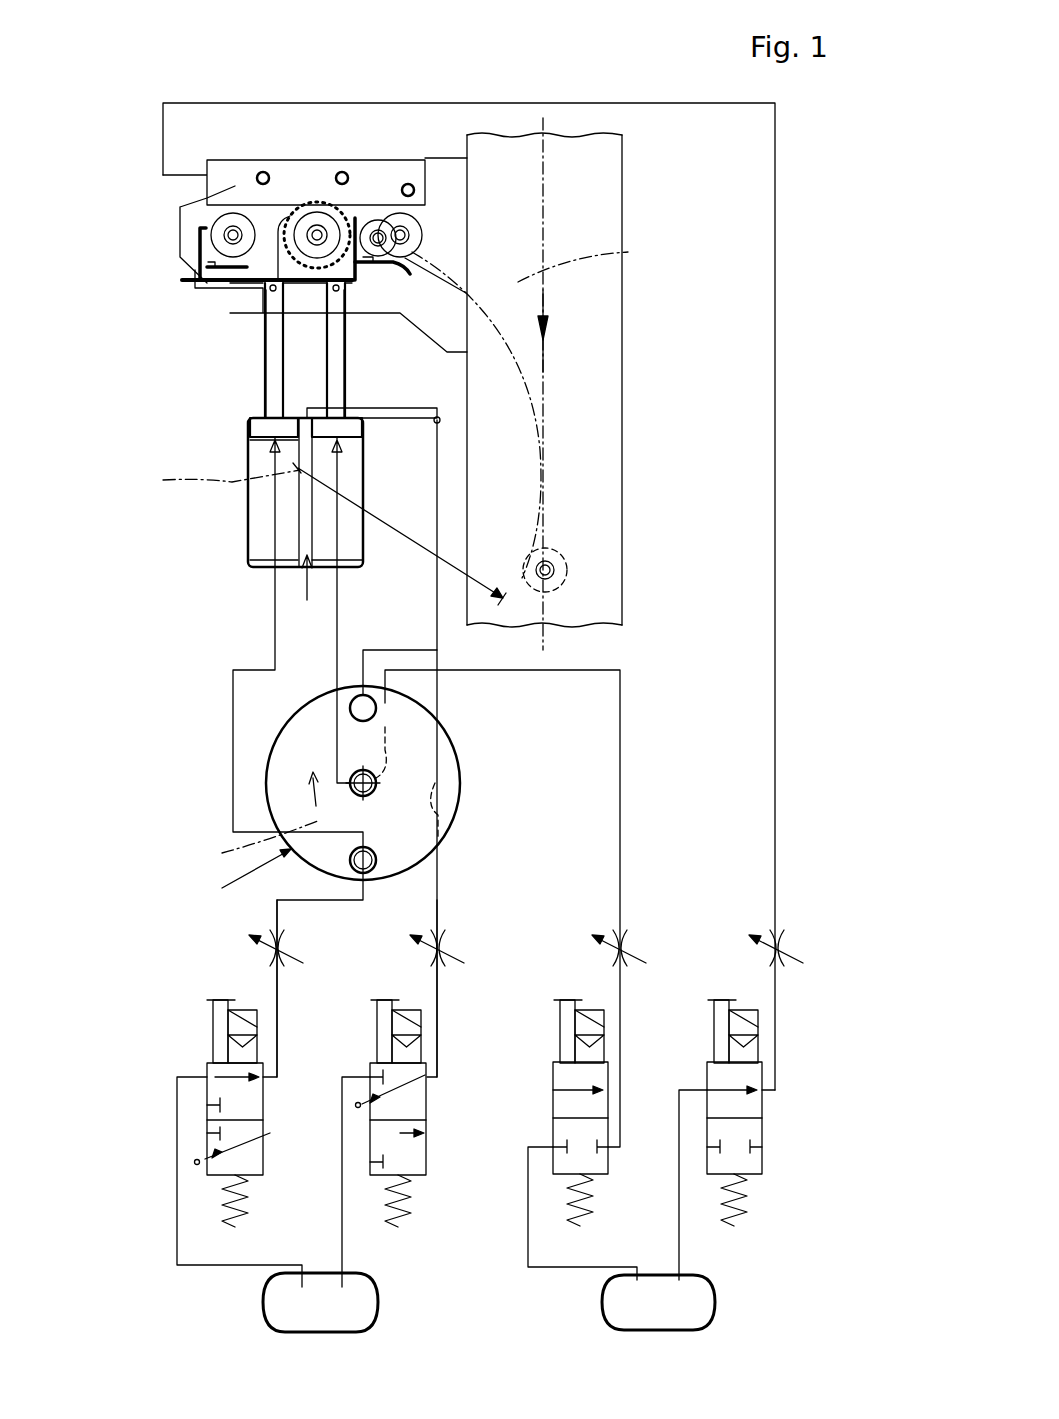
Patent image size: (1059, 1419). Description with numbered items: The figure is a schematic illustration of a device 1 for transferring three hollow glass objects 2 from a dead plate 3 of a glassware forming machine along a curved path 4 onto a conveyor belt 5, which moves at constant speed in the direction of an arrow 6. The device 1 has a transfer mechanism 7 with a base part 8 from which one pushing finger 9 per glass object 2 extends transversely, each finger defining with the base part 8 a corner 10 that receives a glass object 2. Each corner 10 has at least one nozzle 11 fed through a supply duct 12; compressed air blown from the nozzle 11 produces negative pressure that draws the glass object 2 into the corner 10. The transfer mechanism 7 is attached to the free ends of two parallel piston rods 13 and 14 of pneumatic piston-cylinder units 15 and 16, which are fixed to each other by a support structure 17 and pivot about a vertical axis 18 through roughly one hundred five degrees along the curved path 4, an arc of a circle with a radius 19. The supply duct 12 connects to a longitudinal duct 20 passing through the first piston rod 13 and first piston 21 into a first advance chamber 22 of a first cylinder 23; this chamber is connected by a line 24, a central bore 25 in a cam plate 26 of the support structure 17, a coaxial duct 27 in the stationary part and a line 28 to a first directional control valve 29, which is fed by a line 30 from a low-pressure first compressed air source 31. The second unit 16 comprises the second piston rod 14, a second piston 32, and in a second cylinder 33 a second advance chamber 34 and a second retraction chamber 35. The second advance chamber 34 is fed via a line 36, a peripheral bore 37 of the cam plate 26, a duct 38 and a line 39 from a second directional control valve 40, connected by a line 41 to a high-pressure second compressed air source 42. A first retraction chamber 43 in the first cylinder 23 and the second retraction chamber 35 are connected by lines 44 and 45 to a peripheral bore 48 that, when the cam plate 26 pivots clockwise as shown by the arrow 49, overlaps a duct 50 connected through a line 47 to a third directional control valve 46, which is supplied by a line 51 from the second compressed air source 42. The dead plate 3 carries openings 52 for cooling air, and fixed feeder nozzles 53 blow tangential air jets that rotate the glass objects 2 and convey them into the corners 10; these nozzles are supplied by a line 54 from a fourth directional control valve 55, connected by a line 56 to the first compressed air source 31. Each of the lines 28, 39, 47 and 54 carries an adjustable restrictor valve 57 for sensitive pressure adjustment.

The device 1 is at (148, 386).
The hollow glass object 2 is at (221, 221).
The dead plate 3 is at (192, 231).
The curved path 4 is at (538, 384).
The conveyor belt 5 is at (620, 385).
The arrow 6 is at (548, 305).
The transfer mechanism 7 is at (178, 281).
The base part 8 is at (210, 257).
The pushing finger 9 is at (203, 227).
The corner 10 is at (197, 255).
The nozzle 11 is at (250, 190).
The supply duct 12 is at (303, 290).
The first piston rod 13 is at (346, 366).
The second piston rod 14 is at (265, 370).
The first piston-cylinder unit 15 is at (366, 549).
The second piston-cylinder unit 16 is at (247, 540).
The support structure 17 is at (260, 731).
The vertical axis 18 is at (227, 664).
The radius 19 is at (375, 510).
The longitudinal duct 20 is at (346, 395).
The first piston 21 is at (360, 438).
The first advance chamber 22 is at (360, 475).
The first cylinder 23 is at (360, 568).
The line 24 is at (340, 628).
The central bore 25 is at (370, 796).
The cam plate 26 is at (283, 752).
The duct 27 is at (404, 749).
The line 28 is at (622, 757).
The first directional control valve 29 is at (607, 1175).
The line 30 is at (528, 1240).
The first compressed air source 31 is at (715, 1300).
The second piston 32 is at (250, 432).
The second cylinder 33 is at (250, 510).
The second advance chamber 34 is at (250, 565).
The second retraction chamber 35 is at (250, 420).
The line 36 is at (233, 722).
The bore 37 is at (347, 868).
The duct 38 is at (400, 862).
The line 39 is at (278, 1015).
The second directional control valve 40 is at (264, 1175).
The line 41 is at (177, 1230).
The second compressed air source 42 is at (378, 1300).
The first retraction chamber 43 is at (318, 418).
The line 44 is at (445, 428).
The line 45 is at (447, 470).
The third directional control valve 46 is at (428, 1175).
The line 47 is at (440, 1015).
The bore 48 is at (378, 710).
The arrow 49 is at (312, 790).
The duct 50 is at (440, 790).
The line 51 is at (342, 1250).
The openings 52 is at (345, 205).
The feeder nozzle 53 is at (262, 172).
The line 54 is at (775, 468).
The fourth directional control valve 55 is at (762, 1175).
The line 56 is at (679, 1248).
The adjustable restrictor valve 57 is at (290, 945).